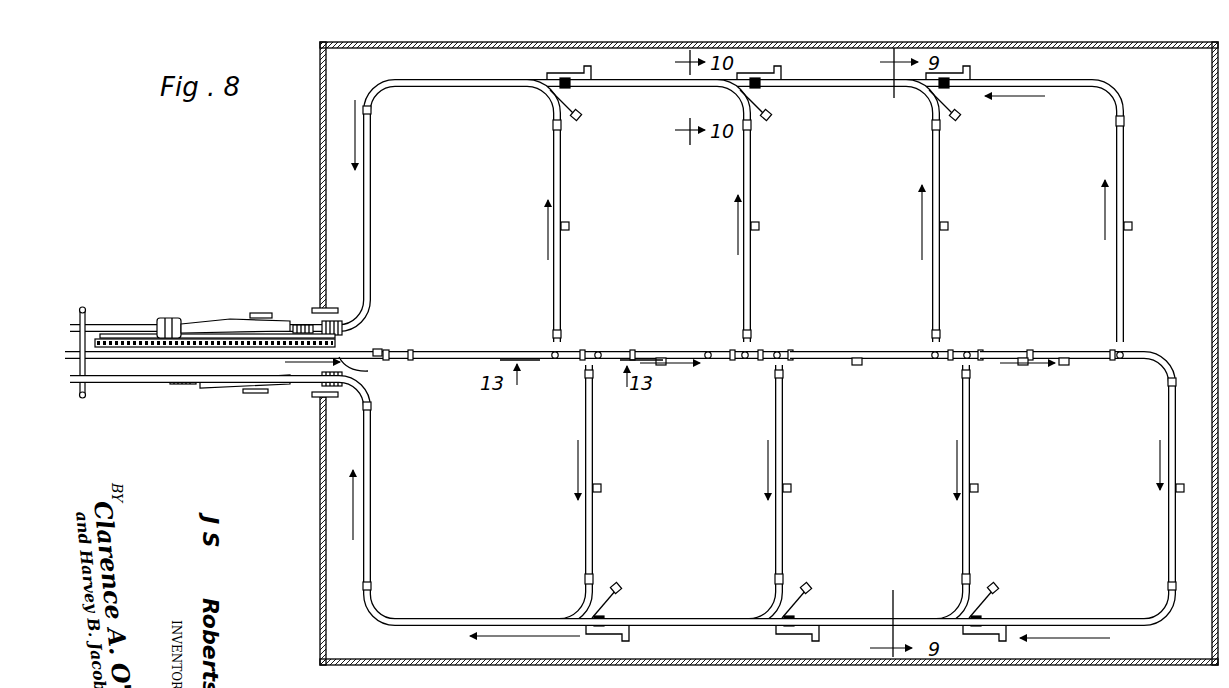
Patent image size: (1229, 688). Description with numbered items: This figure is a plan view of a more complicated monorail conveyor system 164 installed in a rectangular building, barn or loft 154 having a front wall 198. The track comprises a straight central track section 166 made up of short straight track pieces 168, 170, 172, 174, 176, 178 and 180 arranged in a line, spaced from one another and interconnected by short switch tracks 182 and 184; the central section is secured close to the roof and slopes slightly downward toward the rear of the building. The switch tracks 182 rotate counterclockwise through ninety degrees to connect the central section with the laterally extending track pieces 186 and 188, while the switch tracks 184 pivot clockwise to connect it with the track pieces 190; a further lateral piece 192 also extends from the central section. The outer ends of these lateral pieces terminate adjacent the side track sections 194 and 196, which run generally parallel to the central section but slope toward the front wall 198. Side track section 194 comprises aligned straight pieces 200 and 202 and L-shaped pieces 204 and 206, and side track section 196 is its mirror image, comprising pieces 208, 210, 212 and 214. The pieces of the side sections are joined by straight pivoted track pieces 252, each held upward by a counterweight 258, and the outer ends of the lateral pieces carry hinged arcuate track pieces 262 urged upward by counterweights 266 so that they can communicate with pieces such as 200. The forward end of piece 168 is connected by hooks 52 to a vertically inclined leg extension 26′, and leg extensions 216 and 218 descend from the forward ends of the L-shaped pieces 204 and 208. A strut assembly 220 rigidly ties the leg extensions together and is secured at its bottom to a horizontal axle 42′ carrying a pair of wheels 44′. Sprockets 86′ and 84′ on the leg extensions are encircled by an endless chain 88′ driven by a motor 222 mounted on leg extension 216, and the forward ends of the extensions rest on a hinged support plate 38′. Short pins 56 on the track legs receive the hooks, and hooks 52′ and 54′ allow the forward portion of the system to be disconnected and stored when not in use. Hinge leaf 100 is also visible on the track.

The building 154 is at (1036, 41).
The monorail conveyor system 164 is at (1113, 60).
The front wall 198 is at (320, 193).
The hooks 52′ is at (333, 312).
The hooks 54′ is at (320, 395).
The track leg extension 216 is at (122, 326).
The track leg extension 218 is at (160, 380).
The L-shaped track piece 204 is at (433, 92).
The straight track piece 200 is at (628, 90).
The straight track piece 202 is at (806, 90).
The L-shaped track piece 206 is at (1128, 108).
The laterally extending track piece 188 is at (1126, 180).
The laterally extending track piece 186 is at (562, 198).
The leaf 100 is at (948, 230).
The arcuate track piece 262 is at (543, 95).
The pivoted track piece 252 is at (593, 80).
The counterweight 266 is at (604, 588).
The counterweight 258 is at (617, 631).
The side track section 194 is at (812, 83).
The side track section 196 is at (832, 612).
The straight track section 168 is at (432, 350).
The central track section 166 is at (480, 352).
The straight track section 170 is at (572, 352).
The straight track section 172 is at (635, 353).
The straight track section 174 is at (761, 350).
The track section 176 is at (820, 353).
The straight track section 178 is at (953, 352).
The straight track section 180 is at (1000, 352).
The switch track 184 is at (600, 351).
The switch track 182 is at (737, 352).
The pins 56 is at (381, 352).
The hooks 52 is at (358, 347).
The sprocket 84′ is at (371, 369).
The hinged support plate 38′ is at (83, 306).
The endless chain 88′ is at (130, 344).
The sprocket 86′ is at (100, 340).
The motor 222 is at (178, 322).
The strut assembly 220 is at (232, 318).
The wheels 44′ is at (256, 320).
The axle 42′ is at (252, 378).
The track leg extension 26′ is at (125, 362).
The track piece 208 is at (373, 516).
The track piece 210 is at (642, 619).
The track piece 212 is at (806, 619).
The track piece 214 is at (1014, 619).
The laterally extending track piece 192 is at (1160, 478).
The laterally extending track piece 190 is at (593, 455).